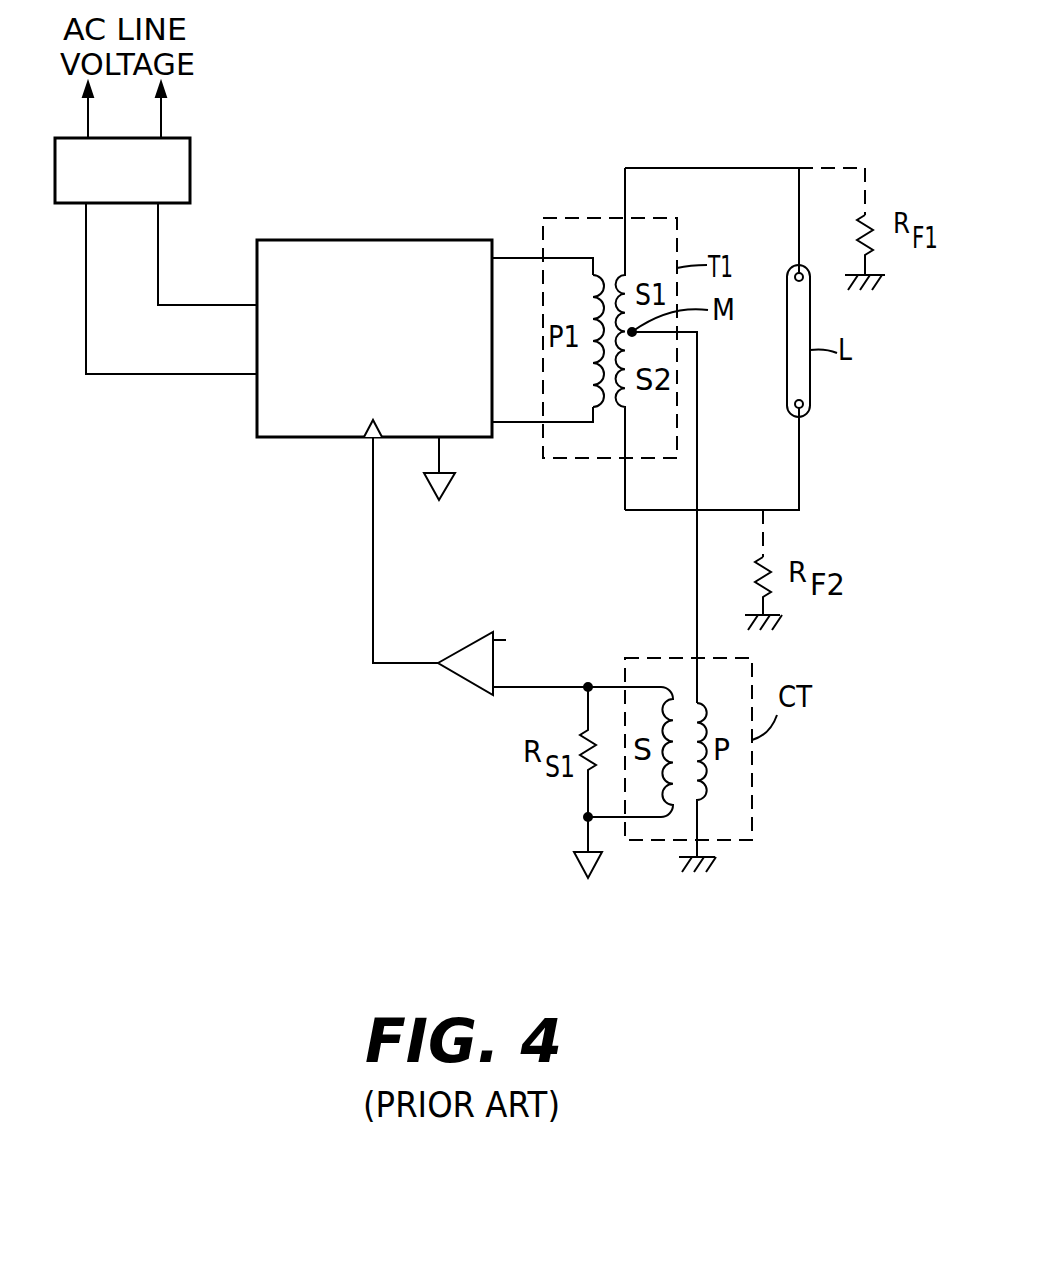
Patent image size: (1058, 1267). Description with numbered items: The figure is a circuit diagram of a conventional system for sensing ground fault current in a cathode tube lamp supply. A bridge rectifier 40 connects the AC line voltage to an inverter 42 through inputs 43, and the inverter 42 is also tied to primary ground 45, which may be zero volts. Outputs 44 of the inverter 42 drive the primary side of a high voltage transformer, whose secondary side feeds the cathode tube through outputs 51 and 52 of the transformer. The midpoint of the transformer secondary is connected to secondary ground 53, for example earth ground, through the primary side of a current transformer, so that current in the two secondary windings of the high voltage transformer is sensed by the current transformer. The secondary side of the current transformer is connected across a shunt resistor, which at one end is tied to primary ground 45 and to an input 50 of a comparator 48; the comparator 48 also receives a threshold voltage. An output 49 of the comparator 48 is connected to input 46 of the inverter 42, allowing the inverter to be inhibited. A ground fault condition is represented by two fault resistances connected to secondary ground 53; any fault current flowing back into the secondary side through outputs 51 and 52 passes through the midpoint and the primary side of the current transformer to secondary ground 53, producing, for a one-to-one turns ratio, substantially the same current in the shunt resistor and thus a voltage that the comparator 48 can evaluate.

The bridge rectifier 40 is at (185, 137).
The inverter 42 is at (372, 240).
The inputs 43 is at (245, 304).
The outputs 44 is at (515, 257).
The primary ground 45 is at (432, 492).
The input 46 is at (372, 484).
The comparator 48 is at (452, 650).
The output 49 is at (428, 666).
The input 50 is at (515, 690).
The output 51 is at (798, 247).
The output 52 is at (798, 437).
The secondary ground 53 is at (877, 280).